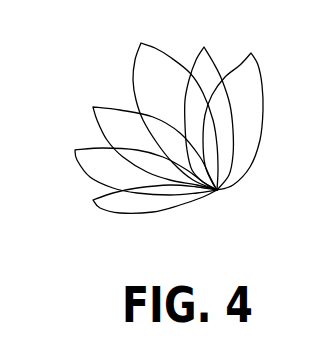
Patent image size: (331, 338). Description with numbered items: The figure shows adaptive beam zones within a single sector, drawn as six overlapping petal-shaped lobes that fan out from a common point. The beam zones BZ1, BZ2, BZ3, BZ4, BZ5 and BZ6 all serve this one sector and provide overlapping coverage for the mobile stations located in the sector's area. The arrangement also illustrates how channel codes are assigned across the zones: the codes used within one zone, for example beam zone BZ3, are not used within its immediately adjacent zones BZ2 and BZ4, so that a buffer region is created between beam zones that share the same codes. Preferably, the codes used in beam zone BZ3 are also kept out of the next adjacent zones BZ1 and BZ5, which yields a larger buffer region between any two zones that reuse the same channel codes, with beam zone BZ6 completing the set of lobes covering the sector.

The beam zone BZ1 is at (245, 110).
The beam zone BZ2 is at (208, 105).
The beam zone BZ3 is at (160, 108).
The beam zone BZ4 is at (137, 136).
The beam zone BZ5 is at (122, 160).
The beam zone BZ6 is at (131, 199).